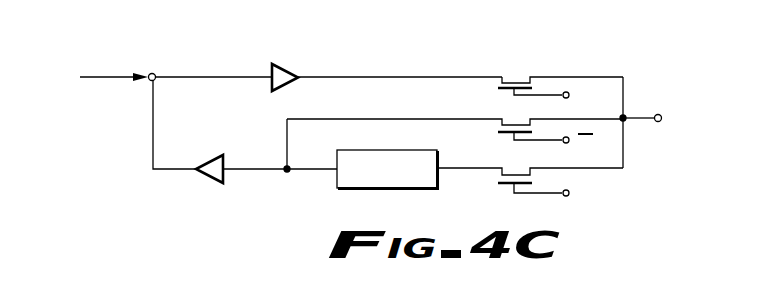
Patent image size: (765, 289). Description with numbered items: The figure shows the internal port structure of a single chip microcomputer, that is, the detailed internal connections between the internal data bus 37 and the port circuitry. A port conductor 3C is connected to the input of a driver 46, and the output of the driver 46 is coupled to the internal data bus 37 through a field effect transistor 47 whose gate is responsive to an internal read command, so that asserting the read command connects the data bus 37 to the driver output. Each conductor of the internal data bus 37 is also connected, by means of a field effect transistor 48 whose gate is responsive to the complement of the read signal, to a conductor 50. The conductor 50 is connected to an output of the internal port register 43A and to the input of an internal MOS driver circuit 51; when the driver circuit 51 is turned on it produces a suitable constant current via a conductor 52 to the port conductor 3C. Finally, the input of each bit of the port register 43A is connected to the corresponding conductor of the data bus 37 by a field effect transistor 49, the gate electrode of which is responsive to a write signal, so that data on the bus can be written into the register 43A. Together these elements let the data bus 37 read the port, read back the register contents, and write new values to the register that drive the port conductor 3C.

The Port 0 conductor 3C is at (137, 52).
The driver 46 is at (292, 63).
The field effect transistor 47 is at (520, 78).
The field effect transistor 48 is at (513, 118).
The field effect transistor 49 is at (510, 167).
The internal data bus 37 is at (662, 112).
The conductor 52 is at (152, 141).
The internal MOS driver circuit 51 is at (212, 181).
The conductor 50 is at (287, 172).
The internal Port 0 register 43A is at (408, 188).